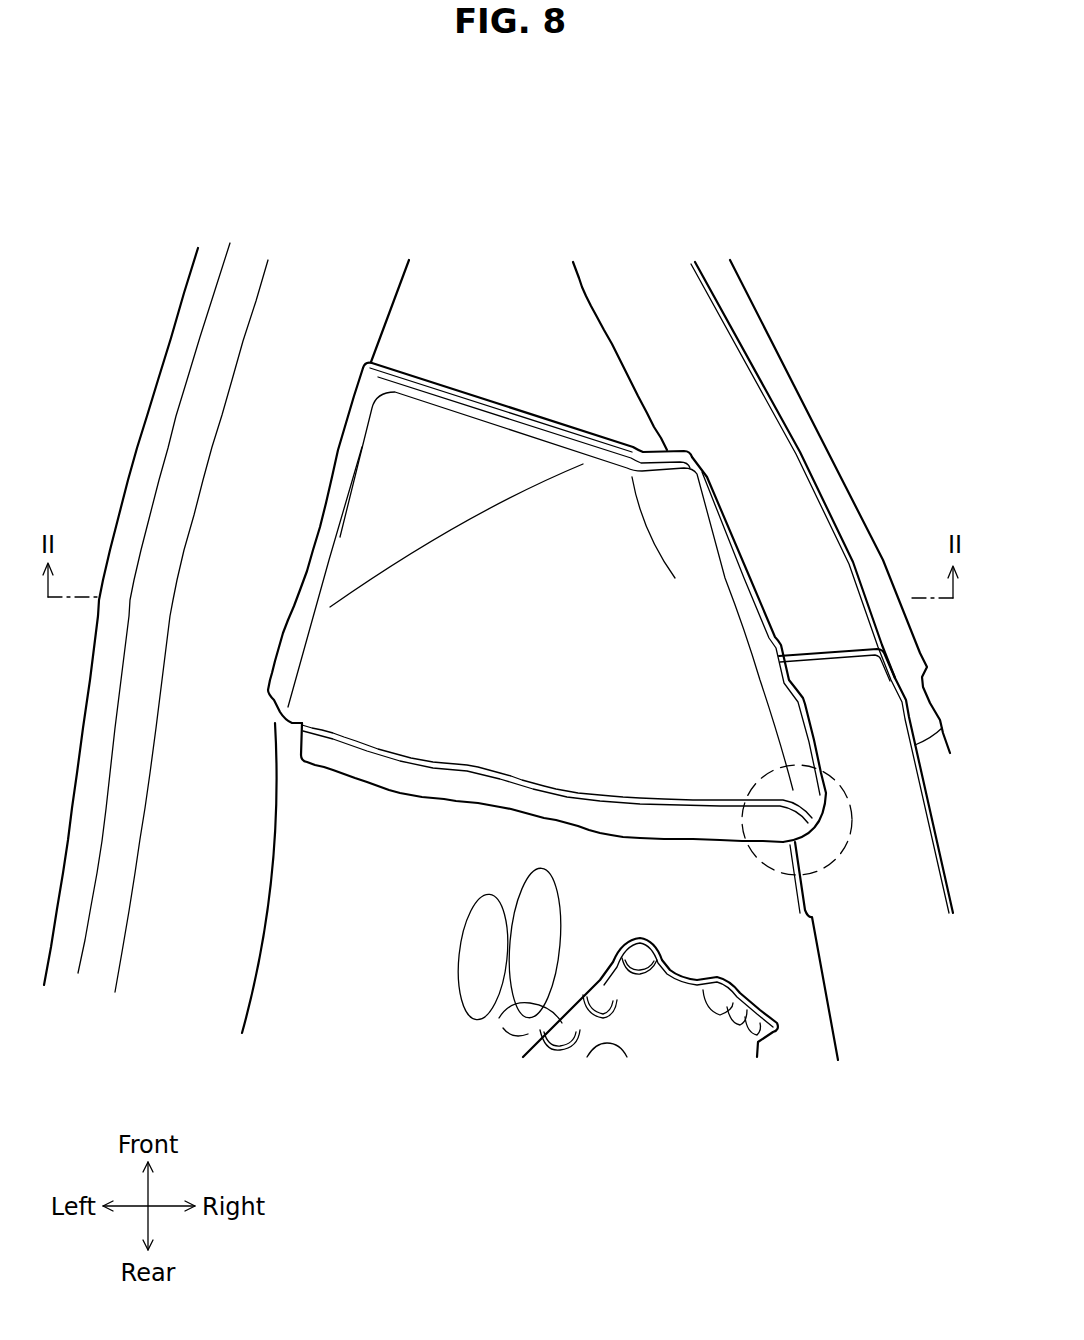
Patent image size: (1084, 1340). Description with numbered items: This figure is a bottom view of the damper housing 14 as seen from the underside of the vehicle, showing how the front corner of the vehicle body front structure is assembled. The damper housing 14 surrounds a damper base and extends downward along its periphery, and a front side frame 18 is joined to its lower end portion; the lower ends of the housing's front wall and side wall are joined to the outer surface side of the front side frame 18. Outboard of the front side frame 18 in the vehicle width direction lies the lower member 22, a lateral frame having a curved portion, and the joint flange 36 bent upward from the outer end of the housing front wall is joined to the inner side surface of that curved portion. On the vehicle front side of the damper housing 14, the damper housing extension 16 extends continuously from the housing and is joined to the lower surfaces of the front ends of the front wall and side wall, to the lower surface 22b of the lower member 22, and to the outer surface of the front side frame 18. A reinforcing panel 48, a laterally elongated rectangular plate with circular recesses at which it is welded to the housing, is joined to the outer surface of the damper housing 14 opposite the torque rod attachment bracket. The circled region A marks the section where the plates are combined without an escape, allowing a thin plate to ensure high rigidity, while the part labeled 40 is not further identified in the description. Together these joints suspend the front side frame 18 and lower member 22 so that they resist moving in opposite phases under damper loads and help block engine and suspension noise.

The damper housing 14 is at (267, 908).
The damper housing extension 16 is at (313, 525).
The front side frame 18 is at (85, 658).
The lower member 22 is at (770, 333).
The lower surface of the lower member 22b is at (763, 590).
The joint flange 36 is at (755, 552).
The lower flange portion 40 is at (397, 793).
The reinforcing panel 48 is at (515, 1008).
The section A is at (853, 840).